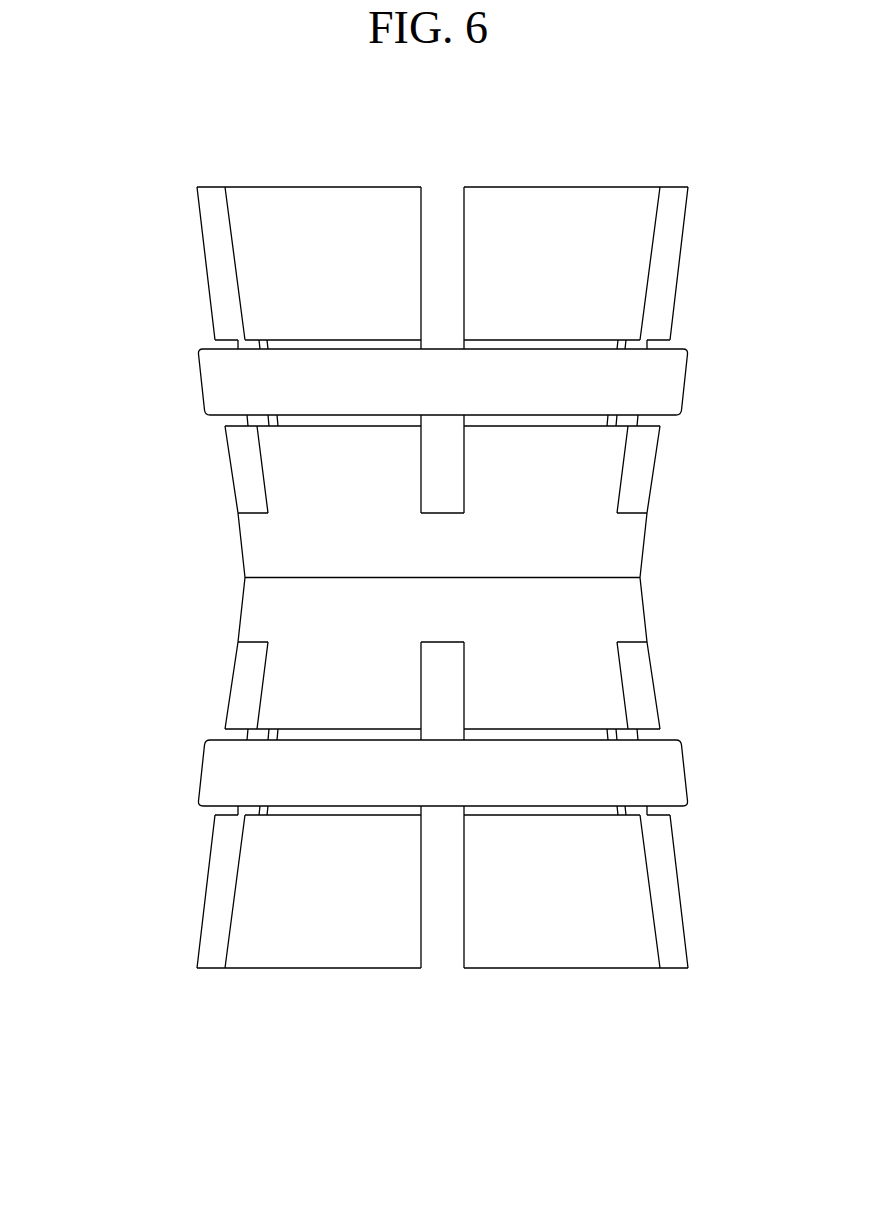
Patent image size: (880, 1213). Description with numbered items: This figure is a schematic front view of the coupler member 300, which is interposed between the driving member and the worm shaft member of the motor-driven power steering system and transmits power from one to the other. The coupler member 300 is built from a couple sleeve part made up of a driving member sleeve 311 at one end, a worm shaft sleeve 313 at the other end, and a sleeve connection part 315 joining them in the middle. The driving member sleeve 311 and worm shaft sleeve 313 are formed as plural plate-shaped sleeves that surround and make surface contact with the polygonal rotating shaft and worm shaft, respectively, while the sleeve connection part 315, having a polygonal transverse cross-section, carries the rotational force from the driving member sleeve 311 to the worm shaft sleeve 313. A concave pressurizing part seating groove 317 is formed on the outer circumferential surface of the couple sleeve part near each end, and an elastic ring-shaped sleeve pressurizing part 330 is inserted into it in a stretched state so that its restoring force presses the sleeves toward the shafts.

The coupler member 300 is at (772, 105).
The driving member sleeve 311 is at (497, 947).
The worm shaft sleeve 313 is at (495, 207).
The sleeve connection part 315 is at (628, 543).
The pressurizing part seating groove 317 is at (658, 340).
The sleeve pressurizing part 330 is at (212, 767).